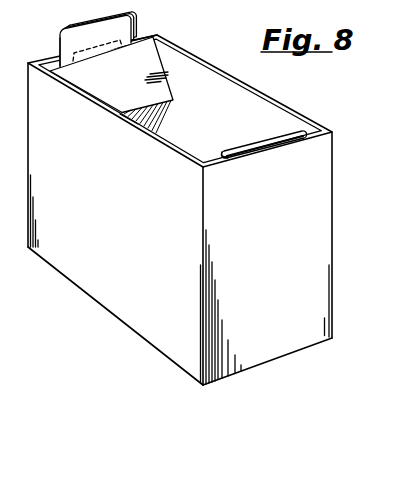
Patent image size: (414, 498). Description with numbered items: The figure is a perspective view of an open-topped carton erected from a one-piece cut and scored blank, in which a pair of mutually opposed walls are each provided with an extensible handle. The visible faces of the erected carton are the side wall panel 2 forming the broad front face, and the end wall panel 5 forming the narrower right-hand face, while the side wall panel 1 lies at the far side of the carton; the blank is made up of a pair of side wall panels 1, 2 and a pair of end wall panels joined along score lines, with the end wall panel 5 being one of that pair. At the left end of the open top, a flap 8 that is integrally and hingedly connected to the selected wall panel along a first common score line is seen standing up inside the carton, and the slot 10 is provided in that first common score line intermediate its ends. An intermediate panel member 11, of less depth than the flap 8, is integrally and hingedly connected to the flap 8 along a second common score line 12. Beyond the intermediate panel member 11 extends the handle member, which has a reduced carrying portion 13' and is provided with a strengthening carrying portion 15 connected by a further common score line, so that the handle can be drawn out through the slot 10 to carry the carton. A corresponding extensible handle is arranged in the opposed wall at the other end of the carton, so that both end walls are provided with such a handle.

The side wall panel 1 is at (240, 89).
The side wall panel 2 is at (121, 196).
The end wall panel 5 is at (271, 221).
The flap 8 is at (165, 71).
The slot 10 is at (152, 36).
The intermediate panel member 11 is at (138, 123).
The second common score line 12 is at (173, 100).
The reduced carrying portion 13' is at (43, 44).
The strengthening carrying portion 15 is at (133, 26).